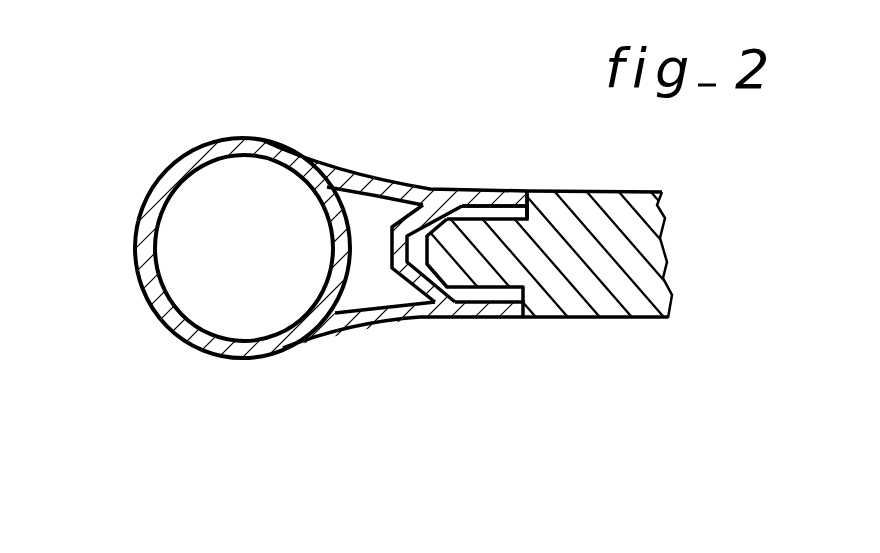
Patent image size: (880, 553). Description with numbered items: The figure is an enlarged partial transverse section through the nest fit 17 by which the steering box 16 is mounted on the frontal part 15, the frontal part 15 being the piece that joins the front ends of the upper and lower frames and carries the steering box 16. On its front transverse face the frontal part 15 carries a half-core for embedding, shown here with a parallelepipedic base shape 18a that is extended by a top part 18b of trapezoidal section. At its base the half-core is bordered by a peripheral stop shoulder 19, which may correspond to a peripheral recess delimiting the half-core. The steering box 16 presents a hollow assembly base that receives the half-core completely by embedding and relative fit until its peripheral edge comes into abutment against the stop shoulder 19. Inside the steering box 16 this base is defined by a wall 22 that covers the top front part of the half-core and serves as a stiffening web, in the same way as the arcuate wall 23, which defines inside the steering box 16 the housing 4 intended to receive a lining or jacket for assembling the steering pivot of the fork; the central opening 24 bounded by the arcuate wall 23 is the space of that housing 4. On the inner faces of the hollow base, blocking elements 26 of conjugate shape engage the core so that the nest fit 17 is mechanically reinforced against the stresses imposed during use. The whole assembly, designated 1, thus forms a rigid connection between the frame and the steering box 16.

The connector assembly 1 is at (580, 332).
The housing 4 is at (186, 128).
The frontal part 15 is at (598, 228).
The steering box 16 is at (272, 138).
The nest fit 17 is at (520, 186).
The parallelepipedic base shape 18a is at (503, 258).
The top part of trapezoidal section 18b is at (428, 280).
The stop shoulder 19 is at (537, 196).
The wall 22 is at (398, 272).
The arcuate wall 23 is at (330, 240).
The opening 24 is at (175, 222).
The blocking elements 26 is at (472, 210).